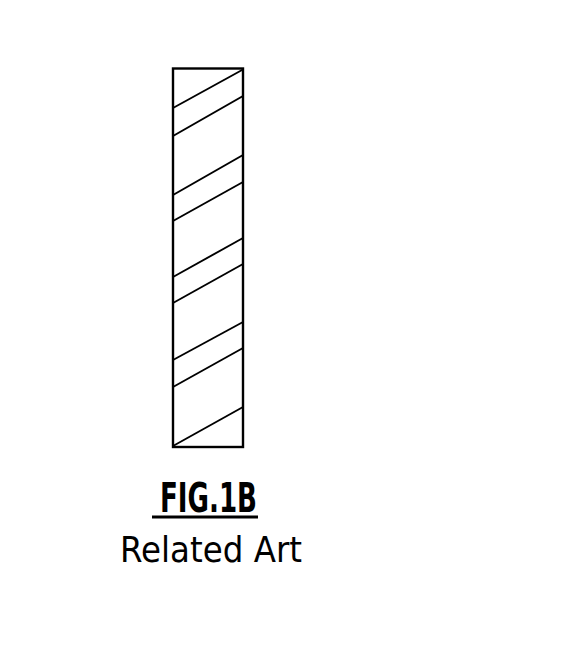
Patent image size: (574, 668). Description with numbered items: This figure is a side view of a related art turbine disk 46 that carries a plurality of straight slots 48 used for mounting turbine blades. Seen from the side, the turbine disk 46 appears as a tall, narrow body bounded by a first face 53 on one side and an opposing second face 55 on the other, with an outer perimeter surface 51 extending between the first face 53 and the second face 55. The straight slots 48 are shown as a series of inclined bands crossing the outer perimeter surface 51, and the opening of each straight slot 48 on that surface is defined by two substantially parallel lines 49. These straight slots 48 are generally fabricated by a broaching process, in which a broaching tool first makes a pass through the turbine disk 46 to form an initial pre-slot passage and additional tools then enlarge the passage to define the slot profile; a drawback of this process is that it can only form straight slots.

The turbine disk 46 is at (258, 232).
The straight slots 48 is at (216, 191).
The substantially parallel lines 49 is at (212, 172).
The outer perimeter surface 51 is at (190, 239).
The first face 53 is at (173, 335).
The second face 55 is at (243, 298).